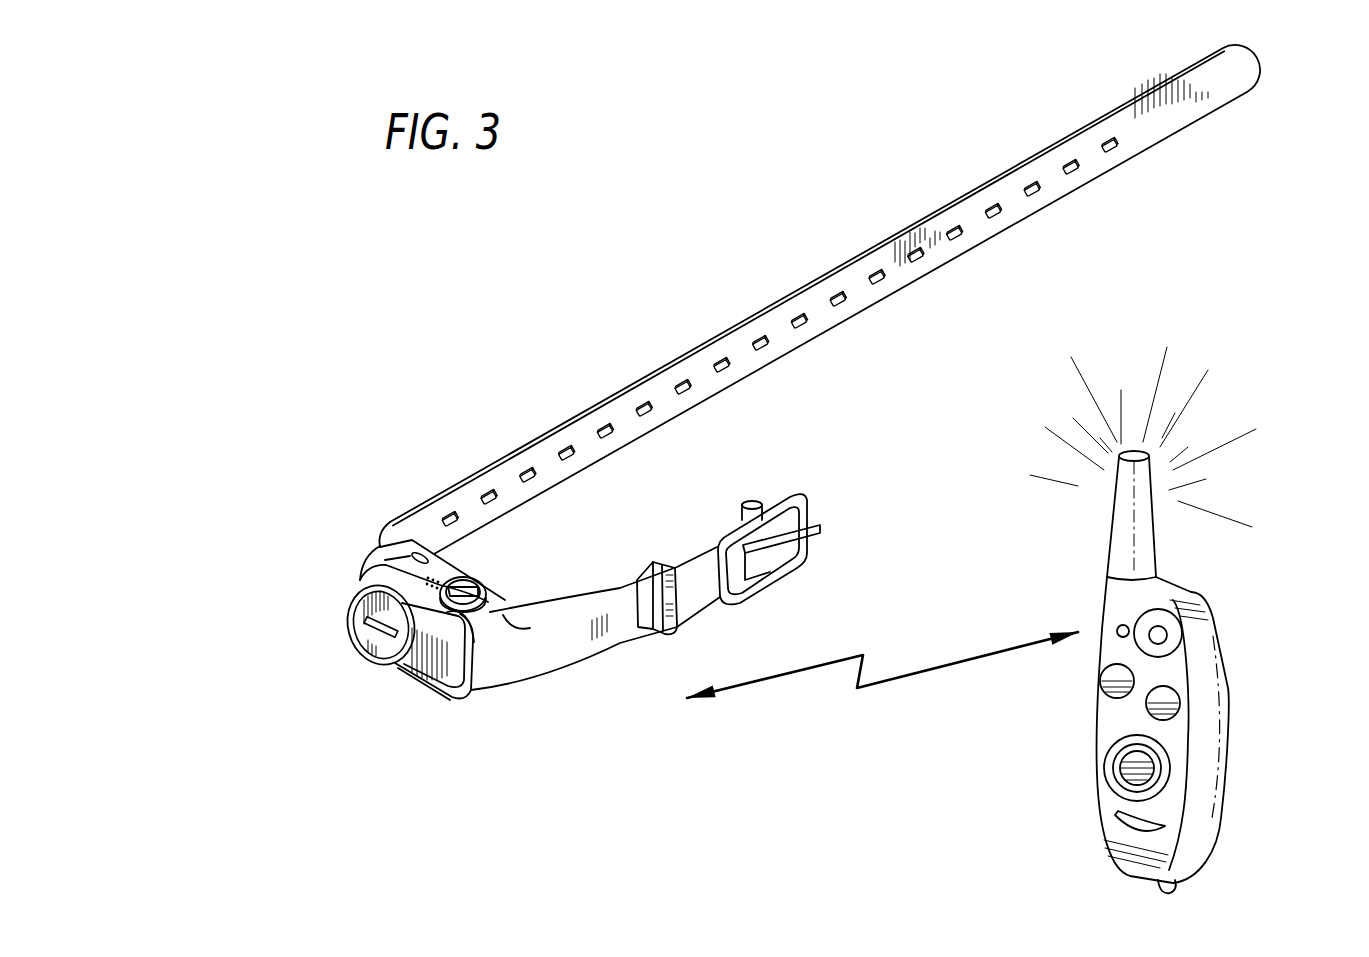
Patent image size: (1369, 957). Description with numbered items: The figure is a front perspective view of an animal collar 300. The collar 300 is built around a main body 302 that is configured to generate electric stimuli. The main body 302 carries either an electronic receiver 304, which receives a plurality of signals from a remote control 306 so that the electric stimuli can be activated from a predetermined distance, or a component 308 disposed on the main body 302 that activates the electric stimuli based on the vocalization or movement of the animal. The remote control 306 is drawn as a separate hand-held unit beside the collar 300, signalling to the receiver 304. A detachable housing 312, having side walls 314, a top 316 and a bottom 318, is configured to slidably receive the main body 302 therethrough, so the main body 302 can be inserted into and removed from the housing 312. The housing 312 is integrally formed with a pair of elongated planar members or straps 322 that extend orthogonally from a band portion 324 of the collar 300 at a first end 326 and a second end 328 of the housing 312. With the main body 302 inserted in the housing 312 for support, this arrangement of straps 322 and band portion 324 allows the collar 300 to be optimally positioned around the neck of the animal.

The animal collar 300 is at (300, 400).
The main body 302 is at (458, 562).
The electronic receiver 304 is at (393, 567).
The remote control 306 is at (1200, 701).
The component 308 is at (430, 582).
The detachable housing 312 is at (437, 690).
The side walls 314 is at (370, 617).
The top 316 is at (488, 613).
The bottom 318 is at (402, 668).
The straps 322 is at (829, 280).
The band portion 324 is at (397, 520).
The first end 326 is at (375, 558).
The second end 328 is at (530, 648).